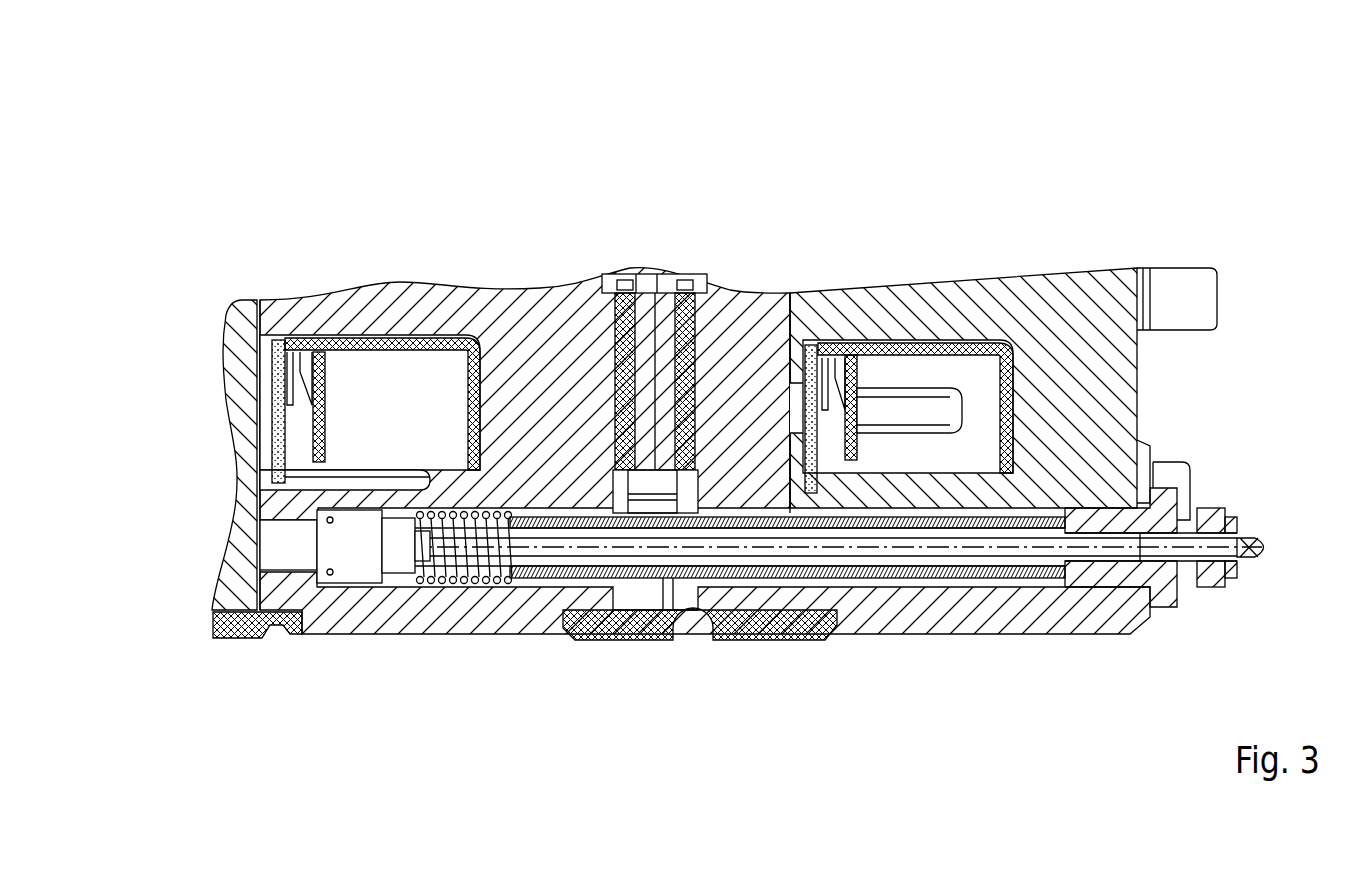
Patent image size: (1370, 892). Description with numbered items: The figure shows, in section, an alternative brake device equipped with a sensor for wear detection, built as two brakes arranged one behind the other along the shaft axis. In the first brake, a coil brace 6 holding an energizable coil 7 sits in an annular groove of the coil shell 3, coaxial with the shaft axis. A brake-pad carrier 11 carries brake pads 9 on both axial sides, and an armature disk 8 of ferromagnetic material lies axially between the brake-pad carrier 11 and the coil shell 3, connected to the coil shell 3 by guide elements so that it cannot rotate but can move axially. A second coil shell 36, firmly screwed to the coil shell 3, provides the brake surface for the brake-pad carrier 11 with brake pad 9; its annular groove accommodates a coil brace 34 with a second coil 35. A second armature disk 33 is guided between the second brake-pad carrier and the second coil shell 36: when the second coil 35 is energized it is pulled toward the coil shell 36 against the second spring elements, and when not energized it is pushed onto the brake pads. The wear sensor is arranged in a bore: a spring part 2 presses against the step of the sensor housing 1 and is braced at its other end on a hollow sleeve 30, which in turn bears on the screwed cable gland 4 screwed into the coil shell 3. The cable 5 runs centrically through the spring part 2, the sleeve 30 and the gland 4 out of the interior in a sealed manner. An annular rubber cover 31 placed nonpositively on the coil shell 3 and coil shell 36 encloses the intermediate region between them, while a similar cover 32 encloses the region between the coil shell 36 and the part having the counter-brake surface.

The sensor housing 1 is at (363, 560).
The spring part 2 is at (408, 578).
The coil shell 3 is at (1073, 302).
The screwed cable gland 4 is at (1160, 510).
The cable 5 is at (1025, 550).
The coil brace 6 is at (852, 350).
The coil 7 is at (900, 375).
The armature disk 8 is at (738, 335).
The brake pad 9 is at (627, 322).
The brake-pad carrier 11 is at (650, 285).
The sleeve 30 is at (865, 570).
The cover 31 is at (662, 632).
The cover 32 is at (250, 628).
The armature disk 33 is at (242, 332).
The coil brace 34 is at (338, 345).
The second coil 35 is at (403, 383).
The second coil shell 36 is at (528, 315).